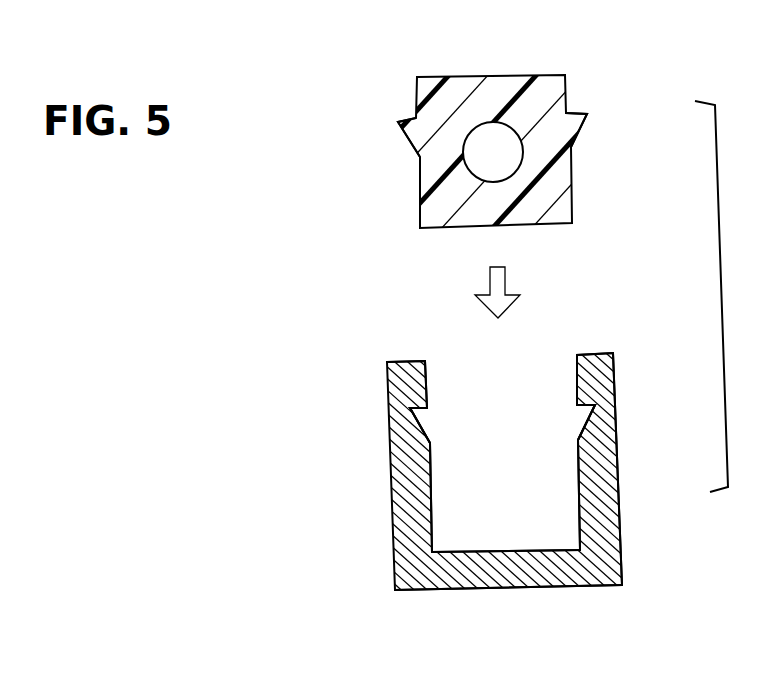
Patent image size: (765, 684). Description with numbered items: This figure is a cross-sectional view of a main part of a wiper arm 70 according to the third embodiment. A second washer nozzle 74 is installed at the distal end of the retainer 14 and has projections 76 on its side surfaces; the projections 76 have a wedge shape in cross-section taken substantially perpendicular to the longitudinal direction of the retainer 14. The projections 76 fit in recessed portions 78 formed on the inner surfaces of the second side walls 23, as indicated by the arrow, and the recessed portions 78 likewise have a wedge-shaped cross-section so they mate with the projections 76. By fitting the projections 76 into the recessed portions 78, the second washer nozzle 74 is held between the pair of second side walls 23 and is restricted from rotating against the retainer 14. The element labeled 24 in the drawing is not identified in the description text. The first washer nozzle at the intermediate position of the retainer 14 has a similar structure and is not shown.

The wiper arm 70 is at (358, 281).
The second washer nozzle 74 is at (479, 73).
The projections 76 is at (403, 135).
The recessed portions 78 is at (423, 430).
The second side walls 23 is at (398, 482).
The channel bottom wall 24 is at (528, 575).
The retainer 14 is at (470, 589).